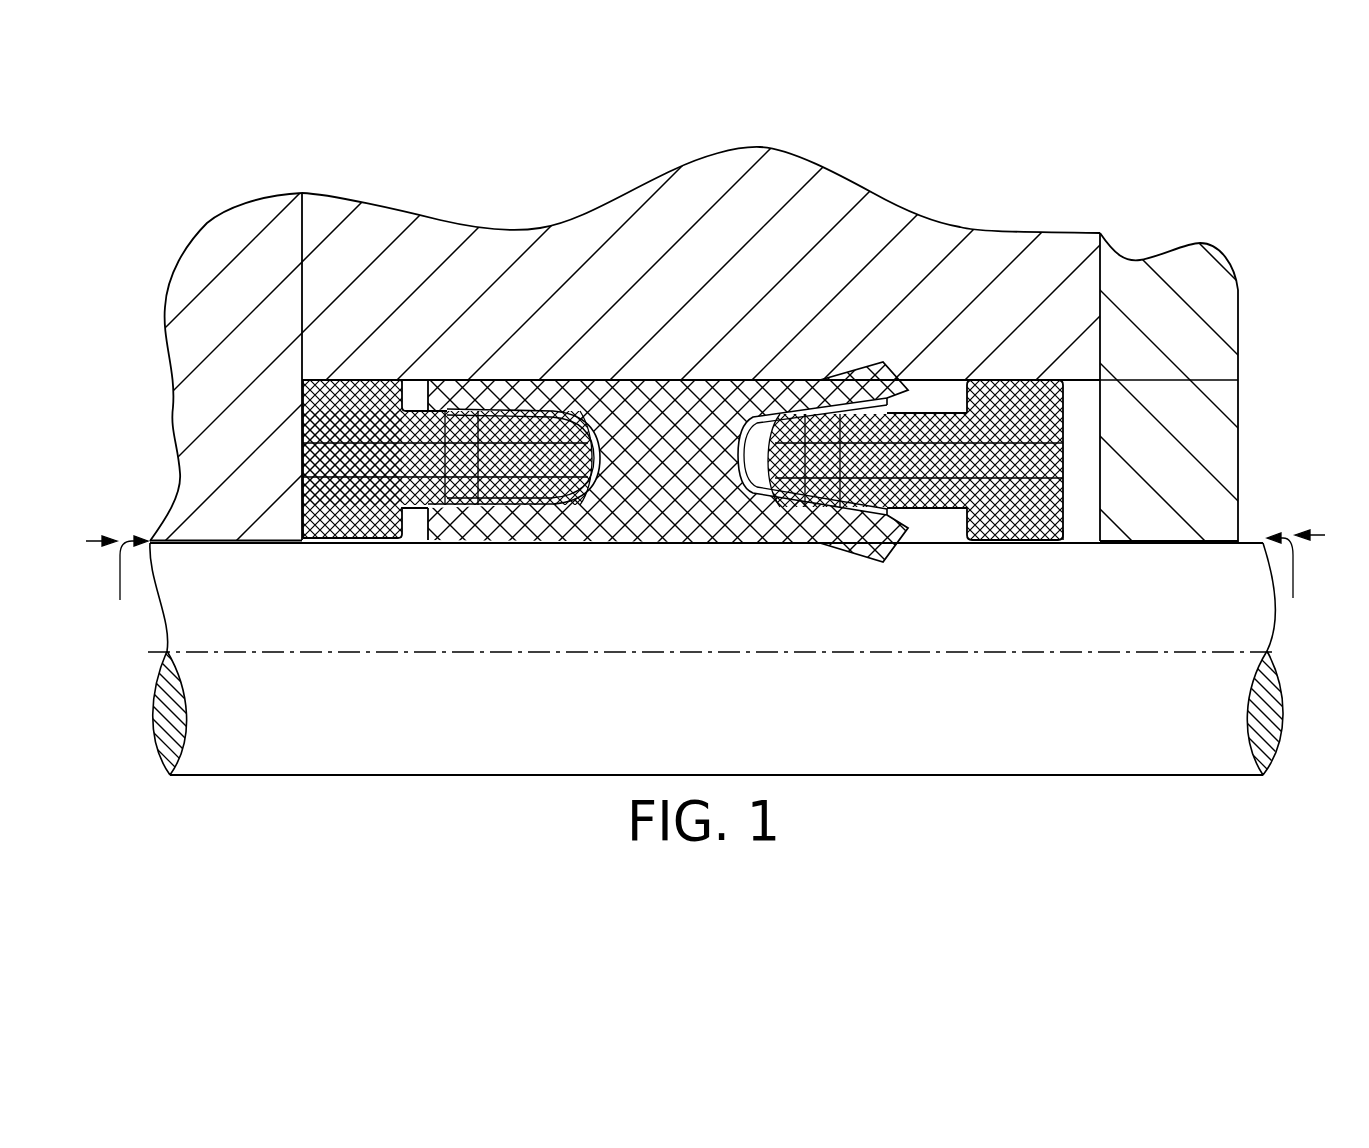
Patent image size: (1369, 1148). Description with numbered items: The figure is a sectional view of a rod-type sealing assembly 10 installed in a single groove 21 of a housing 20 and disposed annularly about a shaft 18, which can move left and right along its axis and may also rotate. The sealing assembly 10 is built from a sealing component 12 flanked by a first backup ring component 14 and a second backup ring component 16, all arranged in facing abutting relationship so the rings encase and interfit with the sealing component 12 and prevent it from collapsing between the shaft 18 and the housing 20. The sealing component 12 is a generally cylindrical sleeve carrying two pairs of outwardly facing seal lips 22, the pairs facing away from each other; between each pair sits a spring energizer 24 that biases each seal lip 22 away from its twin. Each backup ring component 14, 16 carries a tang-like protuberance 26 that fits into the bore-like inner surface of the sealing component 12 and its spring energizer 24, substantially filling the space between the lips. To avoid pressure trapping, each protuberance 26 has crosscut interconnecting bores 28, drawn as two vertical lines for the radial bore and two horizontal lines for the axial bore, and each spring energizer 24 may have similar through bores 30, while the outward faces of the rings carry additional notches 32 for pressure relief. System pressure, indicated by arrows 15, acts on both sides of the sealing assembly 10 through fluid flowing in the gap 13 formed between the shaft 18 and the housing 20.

The sealing assembly 10 is at (1078, 372).
The sealing component 12 is at (667, 525).
The gap 13 is at (706, 582).
The first backup ring component 14 is at (350, 523).
The arrows 15 is at (705, 539).
The second backup ring component 16 is at (1007, 520).
The shaft 18 is at (1053, 748).
The housing 20 is at (1004, 247).
The groove 21 is at (1097, 391).
The seal lips 22 is at (421, 400).
The spring energizer 24 is at (624, 438).
The protuberance 26 is at (580, 508).
The interconnecting bores 28 is at (422, 508).
The through bores 30 is at (573, 460).
The notches 32 is at (300, 503).